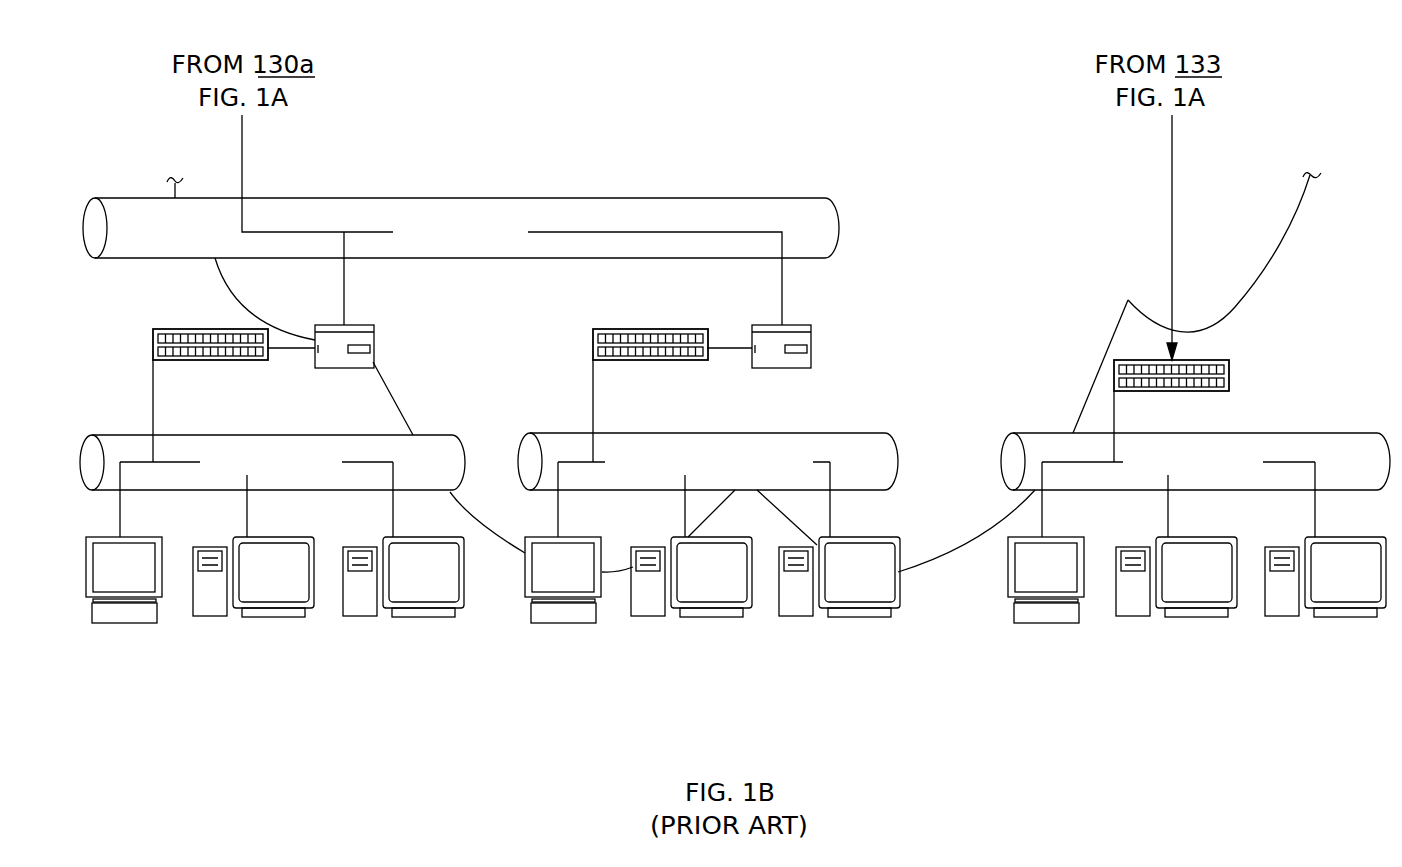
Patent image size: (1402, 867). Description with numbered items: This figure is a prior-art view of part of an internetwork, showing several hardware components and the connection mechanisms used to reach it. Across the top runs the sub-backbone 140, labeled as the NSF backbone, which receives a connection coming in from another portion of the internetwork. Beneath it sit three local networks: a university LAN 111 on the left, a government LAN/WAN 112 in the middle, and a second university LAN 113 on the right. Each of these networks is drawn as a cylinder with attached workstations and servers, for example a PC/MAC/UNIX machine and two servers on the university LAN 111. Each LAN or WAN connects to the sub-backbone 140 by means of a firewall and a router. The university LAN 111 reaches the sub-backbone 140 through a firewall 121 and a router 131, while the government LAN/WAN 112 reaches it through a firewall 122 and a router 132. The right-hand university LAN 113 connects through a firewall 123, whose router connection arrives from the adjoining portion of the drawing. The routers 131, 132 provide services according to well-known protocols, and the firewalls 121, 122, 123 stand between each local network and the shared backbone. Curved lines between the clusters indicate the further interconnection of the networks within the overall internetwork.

The LAN or WAN 111 is at (202, 695).
The LAN or WAN 112 is at (710, 686).
The LAN or WAN 113 is at (1190, 660).
The firewall 121 is at (198, 329).
The firewall 122 is at (637, 329).
The firewall 123 is at (1121, 360).
The router 131 is at (374, 345).
The router 132 is at (812, 345).
The sub-backbone 140 is at (450, 198).